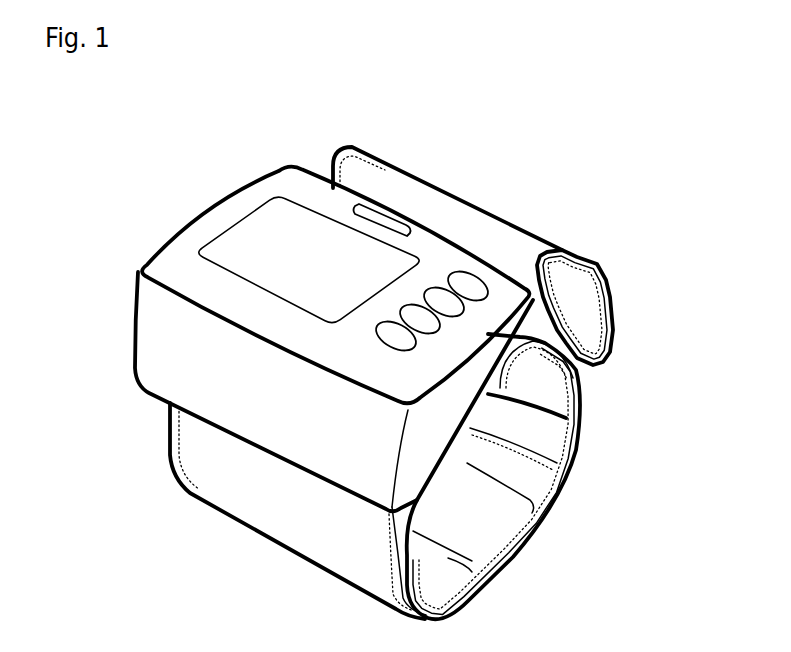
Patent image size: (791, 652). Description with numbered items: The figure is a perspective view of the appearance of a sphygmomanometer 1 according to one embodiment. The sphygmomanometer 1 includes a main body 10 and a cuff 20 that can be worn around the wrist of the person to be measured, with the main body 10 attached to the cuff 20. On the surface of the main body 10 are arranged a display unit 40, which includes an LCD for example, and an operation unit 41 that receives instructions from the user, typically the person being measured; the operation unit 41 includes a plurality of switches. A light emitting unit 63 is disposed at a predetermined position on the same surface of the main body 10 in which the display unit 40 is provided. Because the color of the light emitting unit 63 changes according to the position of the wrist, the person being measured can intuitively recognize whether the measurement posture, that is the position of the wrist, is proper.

The sphygmomanometer 1 is at (758, 142).
The main body 10 is at (133, 360).
The cuff 20 is at (612, 313).
The display unit 40 is at (240, 219).
The operation unit 41 is at (430, 273).
The light emitting unit 63 is at (383, 214).